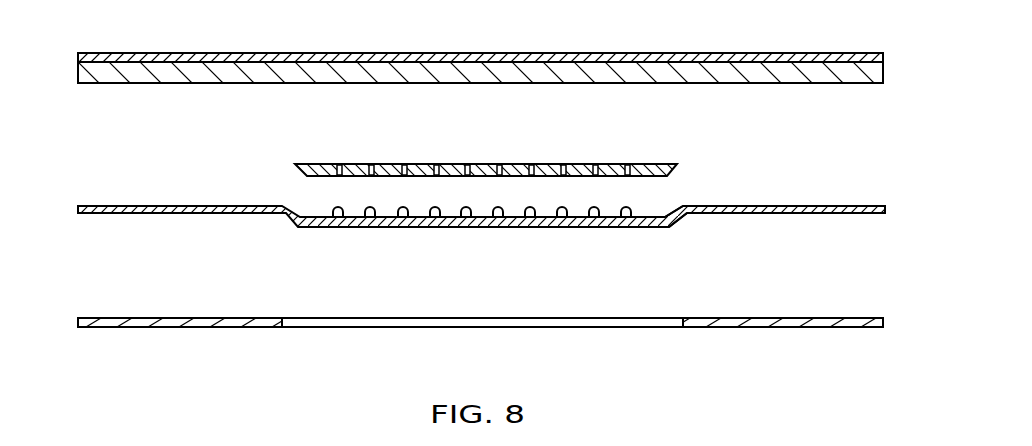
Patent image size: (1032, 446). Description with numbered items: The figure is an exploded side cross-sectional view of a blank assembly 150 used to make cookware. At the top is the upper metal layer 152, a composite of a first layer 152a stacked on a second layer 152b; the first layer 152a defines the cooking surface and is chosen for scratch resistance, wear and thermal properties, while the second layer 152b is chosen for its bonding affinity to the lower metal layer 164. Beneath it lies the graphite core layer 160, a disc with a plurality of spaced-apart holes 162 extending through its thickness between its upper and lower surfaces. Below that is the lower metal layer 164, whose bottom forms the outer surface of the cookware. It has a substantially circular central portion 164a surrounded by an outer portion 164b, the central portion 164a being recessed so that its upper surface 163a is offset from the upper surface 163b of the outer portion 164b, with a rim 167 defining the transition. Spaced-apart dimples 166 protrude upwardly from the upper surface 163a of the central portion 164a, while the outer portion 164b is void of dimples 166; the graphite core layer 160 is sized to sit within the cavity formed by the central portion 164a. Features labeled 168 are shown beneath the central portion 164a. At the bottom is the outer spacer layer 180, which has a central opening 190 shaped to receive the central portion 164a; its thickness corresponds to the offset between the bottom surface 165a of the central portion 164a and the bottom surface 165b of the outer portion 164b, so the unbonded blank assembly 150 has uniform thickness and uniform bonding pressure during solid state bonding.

The blank assembly 150 is at (73, 53).
The upper metal layer 152 is at (507, 43).
The first layer 152a is at (207, 60).
The second layer 152b is at (290, 72).
The graphite core layer 160 is at (499, 153).
The holes 162 is at (400, 164).
The upper surface of central portion 163a is at (515, 217).
The upper surface of outer portion 163b is at (773, 206).
The lower metal layer 164 is at (481, 217).
The central portion 164a is at (452, 227).
The outer portion 164b is at (165, 213).
The bottom surface of central portion 165a is at (562, 227).
The bottom surface of outer portion 165b is at (750, 213).
The dimples 166 is at (654, 192).
The rim 167 is at (680, 215).
The contacts under recessed portion 168 is at (342, 227).
The outer spacer layer 180 is at (886, 320).
The central opening 190 is at (600, 327).